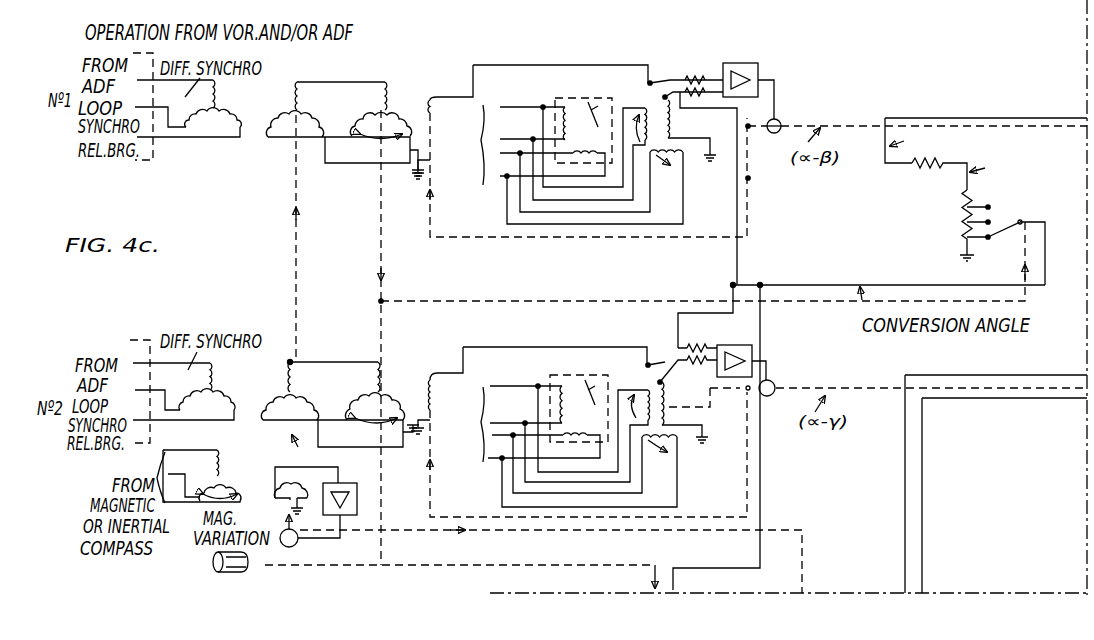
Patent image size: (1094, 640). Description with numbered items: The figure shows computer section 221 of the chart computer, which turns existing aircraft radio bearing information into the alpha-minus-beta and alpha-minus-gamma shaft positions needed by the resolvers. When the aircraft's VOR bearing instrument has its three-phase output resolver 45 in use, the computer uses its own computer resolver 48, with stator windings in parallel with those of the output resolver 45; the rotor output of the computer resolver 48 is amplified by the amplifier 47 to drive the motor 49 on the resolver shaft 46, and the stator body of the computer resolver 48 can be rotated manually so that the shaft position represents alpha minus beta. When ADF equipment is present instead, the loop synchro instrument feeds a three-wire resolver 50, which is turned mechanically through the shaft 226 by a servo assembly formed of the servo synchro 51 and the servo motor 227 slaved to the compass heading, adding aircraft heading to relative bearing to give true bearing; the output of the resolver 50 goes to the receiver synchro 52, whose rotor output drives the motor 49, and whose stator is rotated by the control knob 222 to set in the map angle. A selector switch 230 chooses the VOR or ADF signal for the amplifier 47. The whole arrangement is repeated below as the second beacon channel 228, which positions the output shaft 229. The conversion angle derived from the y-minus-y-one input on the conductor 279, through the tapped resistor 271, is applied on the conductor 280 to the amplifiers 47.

The output resolver 45 is at (575, 122).
The resolver shaft 46 is at (792, 133).
The amplifier 47 is at (752, 74).
The computer resolver 48 is at (682, 151).
The motor 49 is at (781, 119).
The three-wire resolver 50 is at (250, 121).
The servo synchro 51 is at (264, 491).
The receiver synchro 52 is at (414, 100).
The computer section 221 is at (620, 242).
The control knob 222 is at (212, 562).
The shaft 226 is at (293, 320).
The servo motor 227 is at (315, 507).
The second beacon channel 228 is at (410, 388).
The output shaft 229 is at (864, 386).
The selector switch 230 is at (653, 80).
The tapped resistor 271 is at (988, 207).
The conductor 279 is at (1028, 167).
The conductor 280 is at (735, 263).